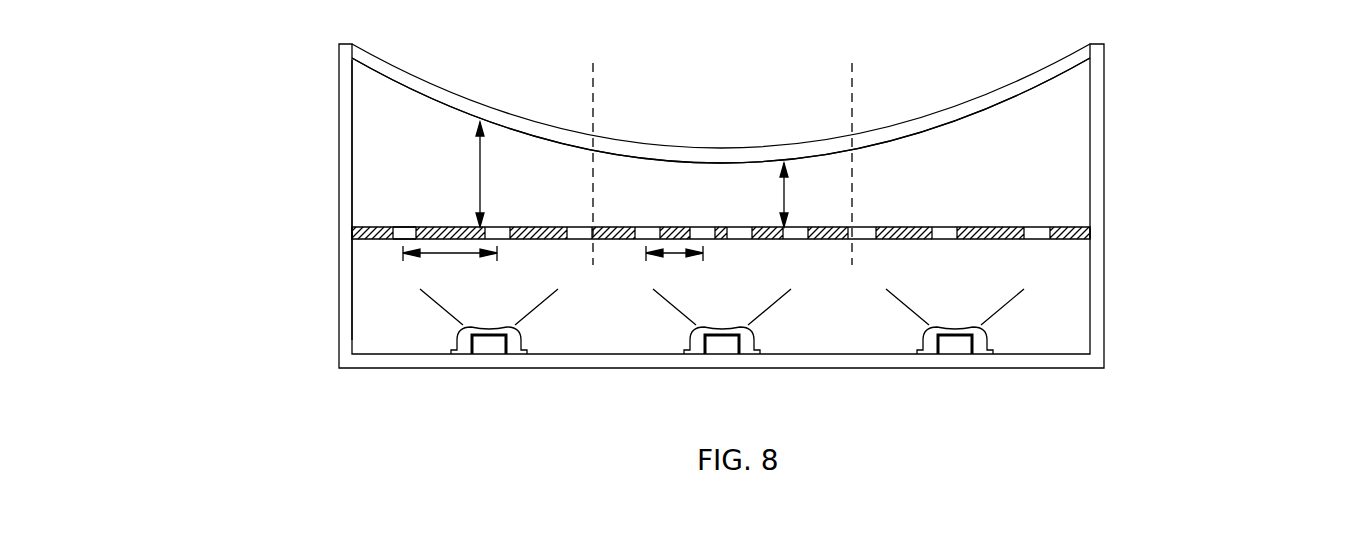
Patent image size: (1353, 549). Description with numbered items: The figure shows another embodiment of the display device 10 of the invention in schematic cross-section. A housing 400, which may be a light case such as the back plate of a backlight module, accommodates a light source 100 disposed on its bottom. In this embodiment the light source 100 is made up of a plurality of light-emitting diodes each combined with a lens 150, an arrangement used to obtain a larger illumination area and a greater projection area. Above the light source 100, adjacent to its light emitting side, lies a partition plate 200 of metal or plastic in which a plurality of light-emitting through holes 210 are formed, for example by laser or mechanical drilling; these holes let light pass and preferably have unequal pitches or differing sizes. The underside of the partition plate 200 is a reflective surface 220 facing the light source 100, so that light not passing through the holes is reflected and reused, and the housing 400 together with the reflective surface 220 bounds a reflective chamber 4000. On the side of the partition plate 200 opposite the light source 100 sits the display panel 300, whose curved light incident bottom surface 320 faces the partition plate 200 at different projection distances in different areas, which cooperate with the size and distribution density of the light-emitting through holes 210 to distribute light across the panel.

The backlight module 10 is at (319, 25).
The light source 100 is at (955, 347).
The lens 150 is at (978, 342).
The partition plate 200 is at (1005, 218).
The light-emitting through holes 210 is at (408, 211).
The reflective surface 220 is at (1012, 240).
The display panel 300 is at (1073, 60).
The light incident bottom surface 320 is at (1020, 96).
The housing 400 is at (1092, 143).
The reflective chamber 4000 is at (1085, 319).